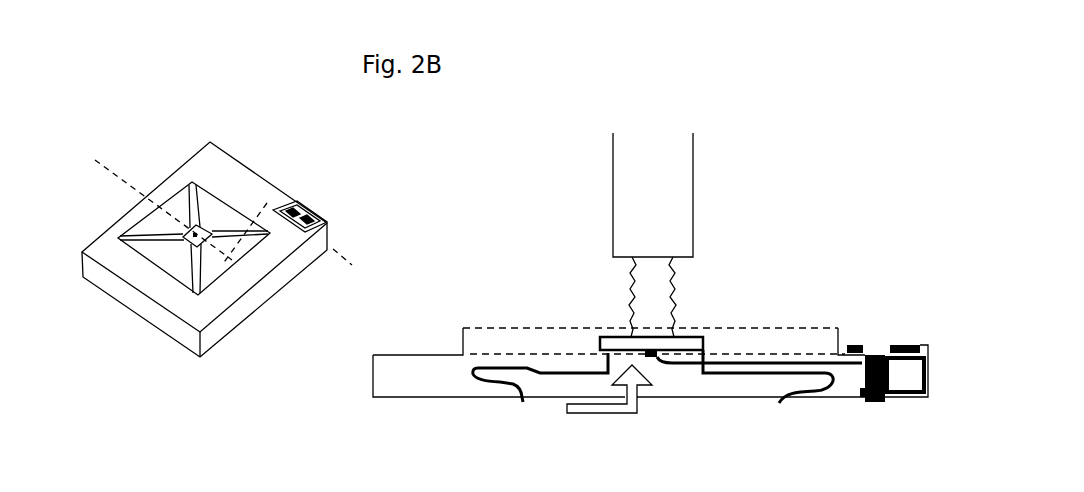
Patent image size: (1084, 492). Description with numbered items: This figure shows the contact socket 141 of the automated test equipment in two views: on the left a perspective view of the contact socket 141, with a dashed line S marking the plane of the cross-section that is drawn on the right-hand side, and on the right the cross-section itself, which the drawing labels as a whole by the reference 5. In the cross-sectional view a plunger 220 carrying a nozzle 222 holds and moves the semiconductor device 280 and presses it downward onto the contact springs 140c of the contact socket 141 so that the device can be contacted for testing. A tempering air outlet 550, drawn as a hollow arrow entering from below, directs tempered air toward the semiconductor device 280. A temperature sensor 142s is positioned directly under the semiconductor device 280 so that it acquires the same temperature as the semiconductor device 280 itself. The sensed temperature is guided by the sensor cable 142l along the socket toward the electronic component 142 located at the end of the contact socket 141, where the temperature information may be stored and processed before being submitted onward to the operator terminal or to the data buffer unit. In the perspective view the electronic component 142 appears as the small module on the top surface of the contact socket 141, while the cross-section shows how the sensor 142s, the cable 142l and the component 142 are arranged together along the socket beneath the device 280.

The cross-section line S is at (744, 161).
The sample holder assembly 5 is at (130, 184).
The contact socket 141 is at (205, 164).
The electronic component 142 is at (307, 213).
The temperature sensor 142s is at (853, 344).
The sensor cable 142l is at (767, 358).
The contact springs 140c is at (746, 375).
The plunger 220 is at (633, 195).
The nozzle 222 is at (628, 298).
The semiconductor device 280 is at (698, 337).
The tempering air outlet 550 is at (600, 414).